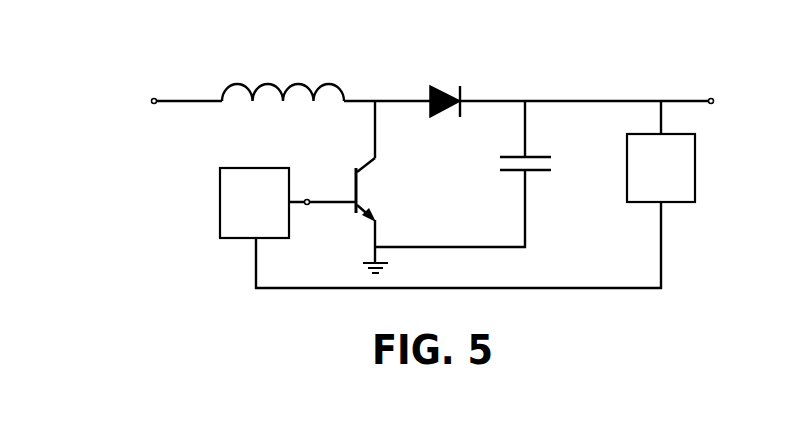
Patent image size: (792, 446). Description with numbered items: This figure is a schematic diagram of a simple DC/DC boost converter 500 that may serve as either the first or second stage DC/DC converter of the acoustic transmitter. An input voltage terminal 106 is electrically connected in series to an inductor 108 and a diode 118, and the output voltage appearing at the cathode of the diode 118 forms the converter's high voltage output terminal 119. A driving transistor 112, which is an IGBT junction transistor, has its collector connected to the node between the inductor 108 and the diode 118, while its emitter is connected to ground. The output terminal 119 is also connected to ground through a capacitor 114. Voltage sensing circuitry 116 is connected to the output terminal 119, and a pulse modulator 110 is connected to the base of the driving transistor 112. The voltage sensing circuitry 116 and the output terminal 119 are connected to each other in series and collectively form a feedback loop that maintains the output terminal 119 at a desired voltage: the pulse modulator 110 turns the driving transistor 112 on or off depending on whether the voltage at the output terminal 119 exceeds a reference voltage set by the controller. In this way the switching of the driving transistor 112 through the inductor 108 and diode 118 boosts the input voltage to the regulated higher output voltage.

The DC/DC boost converter 500 is at (108, 40).
The input voltage terminal 106 is at (154, 99).
The inductor 108 is at (330, 84).
The pulse modulator 110 is at (237, 213).
The driving transistor 112 is at (369, 164).
The capacitor 114 is at (534, 156).
The voltage sensing circuitry 116 is at (643, 180).
The diode 118 is at (435, 88).
The output terminal 119 is at (711, 99).